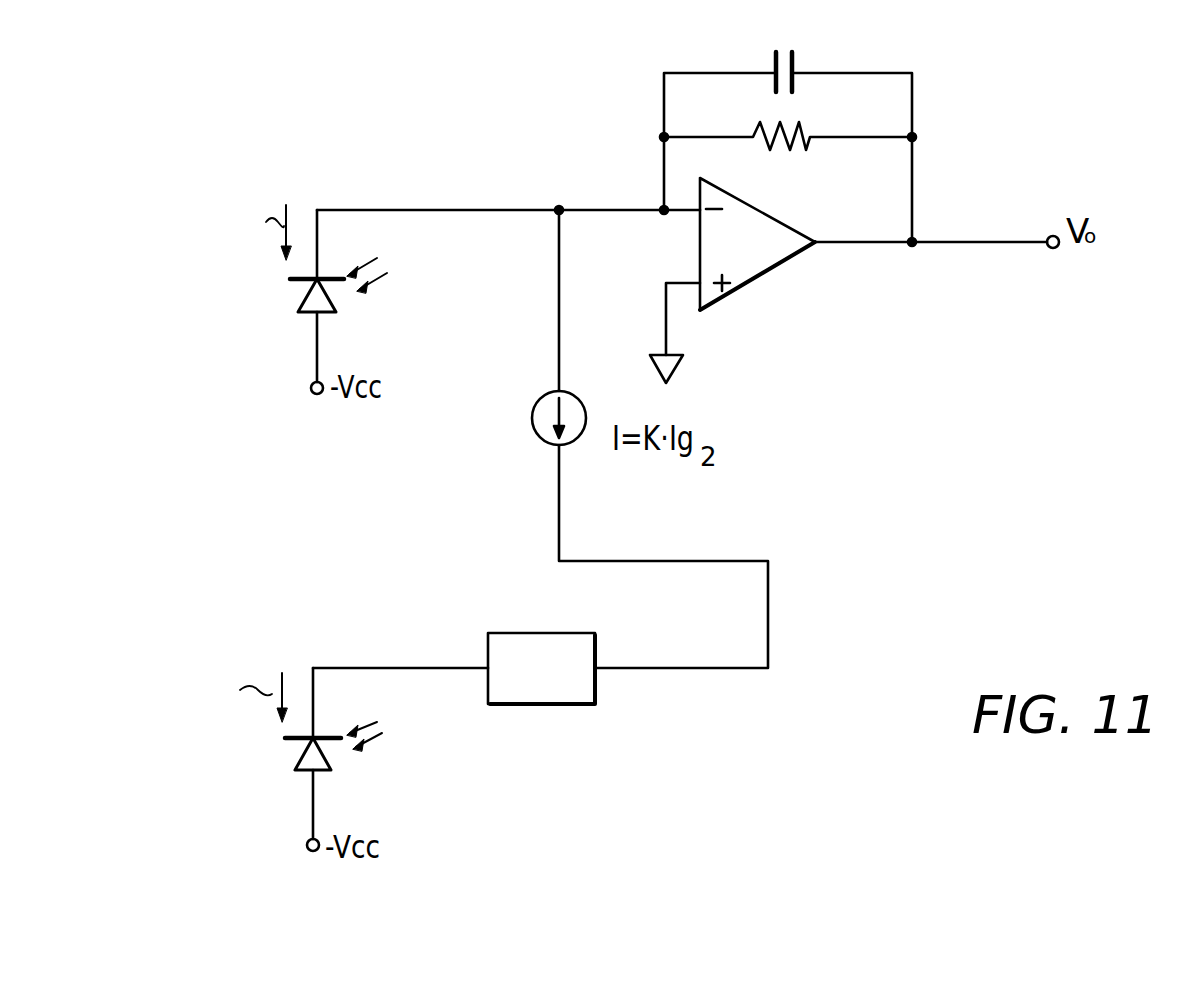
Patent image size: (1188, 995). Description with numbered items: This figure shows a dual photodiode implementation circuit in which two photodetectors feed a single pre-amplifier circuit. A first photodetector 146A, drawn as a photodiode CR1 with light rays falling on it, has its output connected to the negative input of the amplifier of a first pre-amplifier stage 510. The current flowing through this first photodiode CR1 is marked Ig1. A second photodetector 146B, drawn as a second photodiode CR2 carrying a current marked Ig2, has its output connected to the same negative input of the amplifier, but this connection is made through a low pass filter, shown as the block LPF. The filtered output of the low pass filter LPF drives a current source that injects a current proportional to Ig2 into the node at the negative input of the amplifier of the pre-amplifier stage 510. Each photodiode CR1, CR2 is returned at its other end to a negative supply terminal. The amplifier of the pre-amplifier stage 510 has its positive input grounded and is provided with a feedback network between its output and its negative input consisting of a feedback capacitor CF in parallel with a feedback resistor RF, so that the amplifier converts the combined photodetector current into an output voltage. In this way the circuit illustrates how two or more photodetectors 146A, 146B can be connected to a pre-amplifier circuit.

The first pre-amplifier stage 510 is at (775, 333).
The first photodiode CR1 is at (300, 292).
The second photodiode CR2 is at (298, 748).
The first photodetector 146A is at (297, 312).
The second photodetector 146B is at (295, 768).
The feedback capacitor CF is at (783, 93).
The feedback resistor RF is at (786, 145).
The low pass filter LPF is at (541, 668).
The first photodiode current Ig1 is at (270, 243).
The second photodiode current Ig2 is at (242, 708).